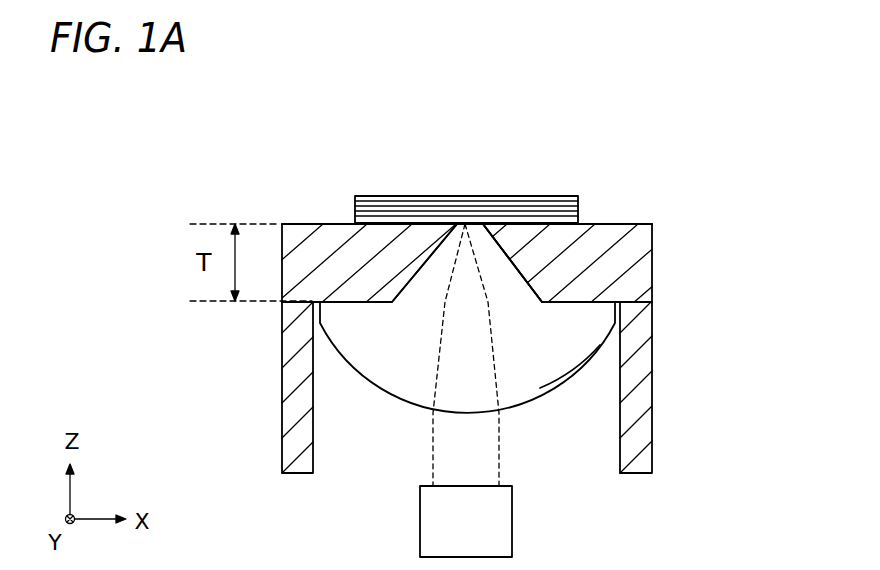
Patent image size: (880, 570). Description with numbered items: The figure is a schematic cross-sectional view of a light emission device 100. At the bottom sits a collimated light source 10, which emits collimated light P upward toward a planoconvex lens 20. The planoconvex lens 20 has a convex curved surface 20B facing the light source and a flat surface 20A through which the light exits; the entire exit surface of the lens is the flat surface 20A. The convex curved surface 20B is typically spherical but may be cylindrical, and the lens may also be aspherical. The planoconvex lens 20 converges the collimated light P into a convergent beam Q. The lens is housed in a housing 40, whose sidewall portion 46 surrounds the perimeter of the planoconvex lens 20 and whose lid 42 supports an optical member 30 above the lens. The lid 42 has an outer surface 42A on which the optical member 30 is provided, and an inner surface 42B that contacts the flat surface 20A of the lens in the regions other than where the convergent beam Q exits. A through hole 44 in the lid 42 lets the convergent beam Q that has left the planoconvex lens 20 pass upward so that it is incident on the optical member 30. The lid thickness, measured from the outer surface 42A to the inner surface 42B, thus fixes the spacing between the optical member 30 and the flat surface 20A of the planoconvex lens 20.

The light emission device 100 is at (328, 186).
The collimated light source 10 is at (512, 522).
The planoconvex lens 20 is at (395, 400).
The flat surface 20A is at (500, 299).
The convex curved surface 20B is at (571, 383).
The optical member 30 is at (407, 196).
The housing 40 is at (653, 224).
The lid 42 is at (312, 222).
The outer surface 42A is at (632, 222).
The inner surface 42B is at (615, 297).
The through hole 44 is at (447, 297).
The sidewall portion 46 is at (652, 386).
The collimated light P is at (433, 452).
The convergent beam Q is at (455, 222).